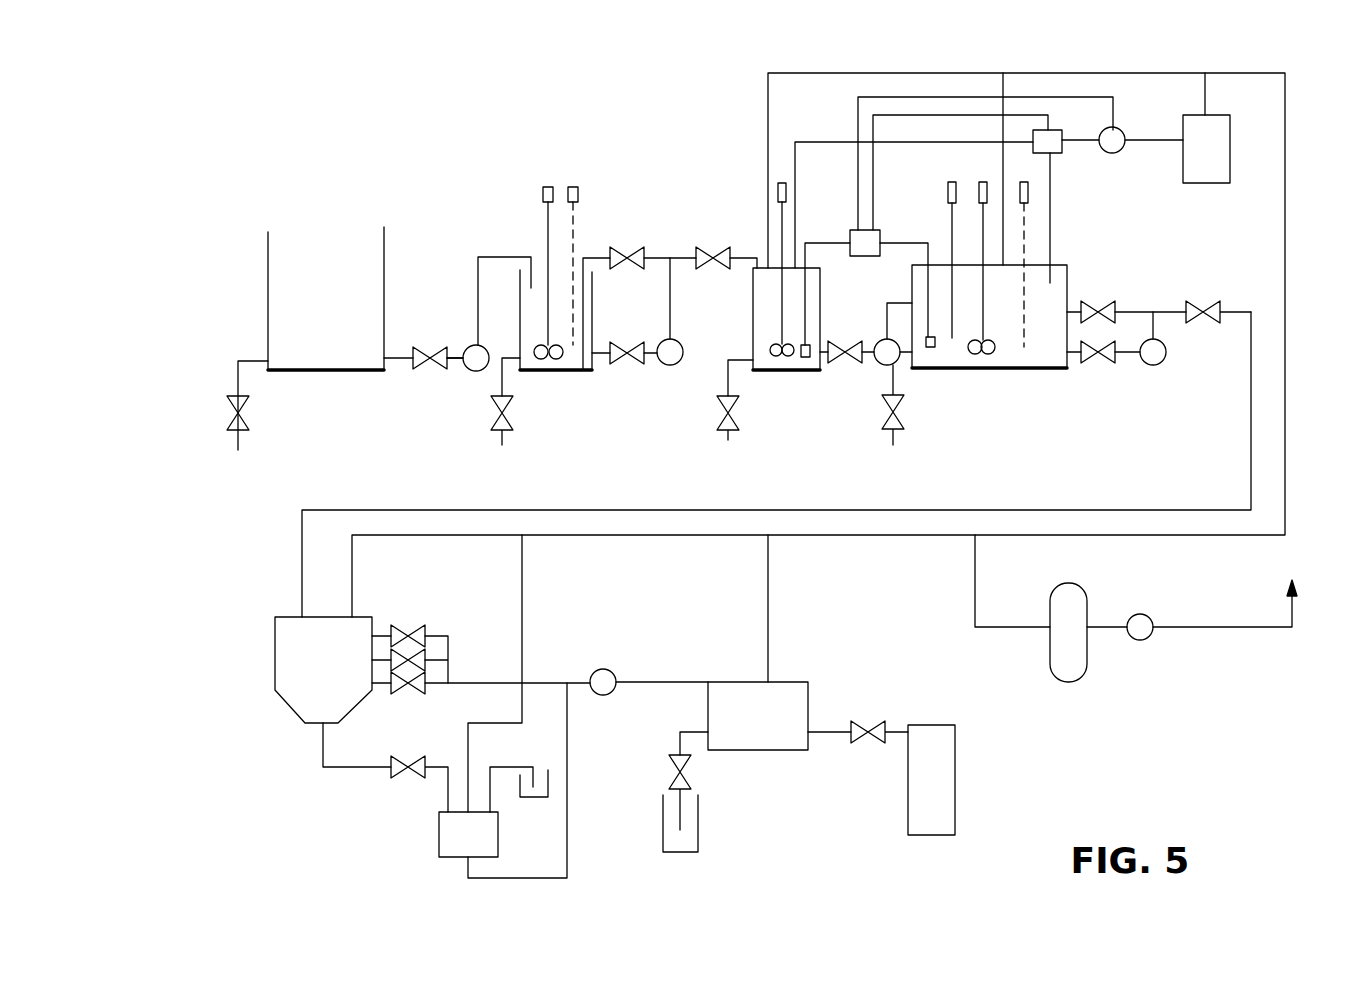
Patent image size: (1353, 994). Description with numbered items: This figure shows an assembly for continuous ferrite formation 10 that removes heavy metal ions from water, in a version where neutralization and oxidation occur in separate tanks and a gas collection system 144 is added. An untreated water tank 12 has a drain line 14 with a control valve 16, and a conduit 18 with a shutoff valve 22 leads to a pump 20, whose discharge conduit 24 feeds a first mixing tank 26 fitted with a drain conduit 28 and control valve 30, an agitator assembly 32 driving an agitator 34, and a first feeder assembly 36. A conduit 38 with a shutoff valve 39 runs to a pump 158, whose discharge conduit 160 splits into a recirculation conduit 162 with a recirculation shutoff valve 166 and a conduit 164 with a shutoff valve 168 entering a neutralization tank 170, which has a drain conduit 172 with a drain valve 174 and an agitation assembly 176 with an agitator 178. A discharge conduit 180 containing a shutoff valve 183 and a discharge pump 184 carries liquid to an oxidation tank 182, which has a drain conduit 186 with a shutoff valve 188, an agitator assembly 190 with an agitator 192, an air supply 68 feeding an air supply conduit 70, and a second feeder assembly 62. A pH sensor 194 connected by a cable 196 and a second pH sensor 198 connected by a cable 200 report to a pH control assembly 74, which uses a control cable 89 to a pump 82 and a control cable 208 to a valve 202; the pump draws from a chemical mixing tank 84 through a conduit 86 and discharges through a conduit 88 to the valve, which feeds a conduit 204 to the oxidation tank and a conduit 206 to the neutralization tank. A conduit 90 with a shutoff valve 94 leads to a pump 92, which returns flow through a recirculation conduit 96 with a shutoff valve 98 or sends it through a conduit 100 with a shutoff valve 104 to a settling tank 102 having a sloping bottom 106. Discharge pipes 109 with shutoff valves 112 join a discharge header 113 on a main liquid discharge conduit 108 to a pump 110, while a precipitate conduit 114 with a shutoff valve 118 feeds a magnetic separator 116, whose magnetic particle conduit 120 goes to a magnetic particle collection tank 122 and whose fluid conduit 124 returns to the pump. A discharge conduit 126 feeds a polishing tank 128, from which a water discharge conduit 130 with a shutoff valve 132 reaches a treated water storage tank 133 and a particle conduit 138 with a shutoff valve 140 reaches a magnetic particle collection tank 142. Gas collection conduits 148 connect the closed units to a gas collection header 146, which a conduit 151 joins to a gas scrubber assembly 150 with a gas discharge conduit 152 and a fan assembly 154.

The assembly for continuous ferrite formation 10 is at (417, 190).
The untreated water tank 12 is at (312, 322).
The drain line 14 is at (238, 381).
The control valve 16 is at (250, 413).
The conduit 18 is at (455, 364).
The pump 20 is at (474, 344).
The shutoff valve 22 is at (416, 370).
The discharge conduit 24 is at (504, 256).
The first mixing tank 26 is at (582, 372).
The drain conduit 28 is at (506, 386).
The control valve 30 is at (493, 418).
The agitator assembly 32 is at (546, 186).
The agitator 34 is at (548, 300).
The first feeder assembly 36 is at (575, 186).
The conduit 38 is at (612, 348).
The shutoff valve 39 is at (635, 366).
The second feeder assembly 62 is at (1020, 181).
The air supply 68 is at (948, 183).
The air supply conduit 70 is at (952, 212).
The pH control assembly 74 is at (860, 257).
The pump 82 is at (1114, 127).
The chemical mixing tank 84 is at (1232, 129).
The conduit 86 is at (1152, 140).
The conduit 88 is at (1066, 141).
The control cable 89 is at (1068, 96).
The conduit 90 is at (1143, 365).
The pump 92 is at (1166, 361).
The shutoff valve 94 is at (1100, 365).
The recirculation conduit 96 is at (1153, 311).
The shutoff valve 98 is at (1090, 305).
The conduit 100 is at (800, 508).
The settling tank 102 is at (305, 682).
The shutoff valve 104 is at (1195, 305).
The cone shaped or sloping bottom 106 is at (272, 701).
The main liquid discharge conduit 108 is at (548, 682).
The discharge pipes 109 is at (382, 634).
The pump 110 is at (613, 672).
The shutoff valves 112 is at (425, 648).
The discharge header 113 is at (450, 648).
The precipitate conduit 114 is at (322, 751).
The magnetic separator 116 is at (438, 834).
The shutoff valve 118 is at (400, 776).
The magnetic particle conduit 120 is at (505, 770).
The magnetic particle collection tank 122 is at (535, 800).
The fluid conduit 124 is at (568, 879).
The discharge conduit 126 is at (668, 682).
The polishing tank 128 is at (733, 729).
The water discharge conduit 130 is at (828, 730).
The shutoff valve 132 is at (868, 746).
The treated water storage tank 133 is at (956, 781).
The particle conduit 138 is at (678, 738).
The shutoff valve 140 is at (698, 777).
The magnetic particle collection tank 142 is at (701, 834).
The gas collection system 144 is at (1190, 720).
The gas collection header 146 is at (1286, 421).
The gas collection conduits 148 is at (767, 110).
The gas scrubber assembly 150 is at (1080, 683).
The conduit 151 is at (977, 571).
The gas discharge conduit 152 is at (1108, 626).
The fan assembly 154 is at (1152, 641).
The pump 158 is at (683, 346).
The discharge conduit 160 is at (668, 297).
The recirculation conduit 162 is at (586, 256).
The conduit 164 is at (670, 256).
The recirculation shutoff valve 166 is at (625, 250).
The shutoff valve 168 is at (718, 251).
The neutralization tank 170 is at (772, 372).
The drain conduit 172 is at (721, 437).
The drain valve 174 is at (722, 396).
The agitation assembly 176 is at (776, 184).
The agitator 178 is at (757, 300).
The discharge conduit 180 is at (885, 306).
The oxidation tank 182 is at (990, 368).
The shutoff valve 183 is at (838, 363).
The discharge pump 184 is at (878, 367).
The drain conduit 186 is at (905, 437).
The shutoff valve 188 is at (905, 411).
The agitator assembly 190 is at (952, 178).
The agitator 192 is at (1025, 368).
The pH sensor 194 is at (810, 346).
The cable 196 is at (828, 242).
The second pH sensor 198 is at (929, 350).
The cable 200 is at (920, 243).
The valve 202 is at (1052, 156).
The conduit 204 is at (1052, 228).
The conduit 206 is at (820, 141).
The control cable 208 is at (883, 114).